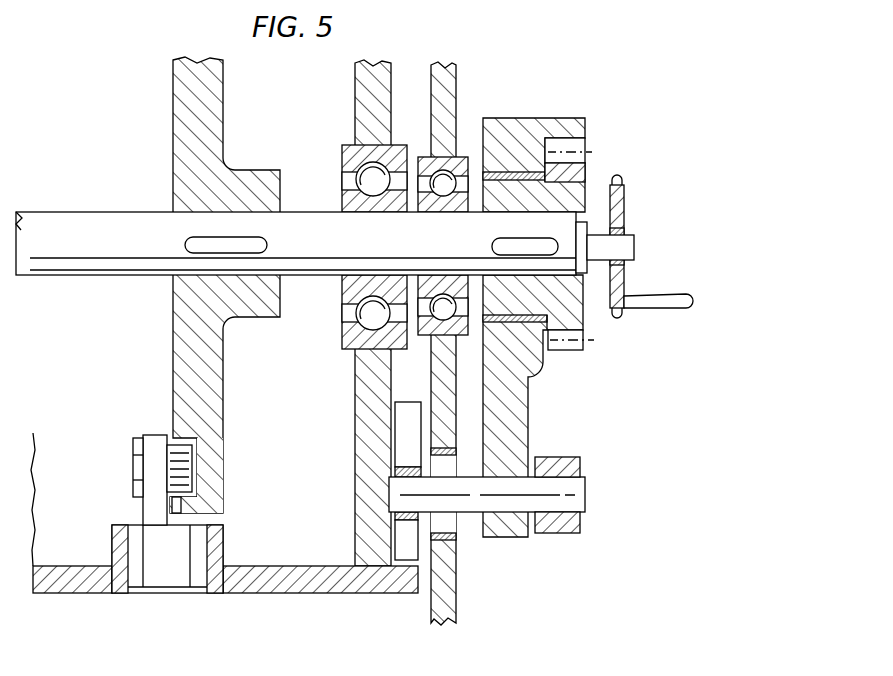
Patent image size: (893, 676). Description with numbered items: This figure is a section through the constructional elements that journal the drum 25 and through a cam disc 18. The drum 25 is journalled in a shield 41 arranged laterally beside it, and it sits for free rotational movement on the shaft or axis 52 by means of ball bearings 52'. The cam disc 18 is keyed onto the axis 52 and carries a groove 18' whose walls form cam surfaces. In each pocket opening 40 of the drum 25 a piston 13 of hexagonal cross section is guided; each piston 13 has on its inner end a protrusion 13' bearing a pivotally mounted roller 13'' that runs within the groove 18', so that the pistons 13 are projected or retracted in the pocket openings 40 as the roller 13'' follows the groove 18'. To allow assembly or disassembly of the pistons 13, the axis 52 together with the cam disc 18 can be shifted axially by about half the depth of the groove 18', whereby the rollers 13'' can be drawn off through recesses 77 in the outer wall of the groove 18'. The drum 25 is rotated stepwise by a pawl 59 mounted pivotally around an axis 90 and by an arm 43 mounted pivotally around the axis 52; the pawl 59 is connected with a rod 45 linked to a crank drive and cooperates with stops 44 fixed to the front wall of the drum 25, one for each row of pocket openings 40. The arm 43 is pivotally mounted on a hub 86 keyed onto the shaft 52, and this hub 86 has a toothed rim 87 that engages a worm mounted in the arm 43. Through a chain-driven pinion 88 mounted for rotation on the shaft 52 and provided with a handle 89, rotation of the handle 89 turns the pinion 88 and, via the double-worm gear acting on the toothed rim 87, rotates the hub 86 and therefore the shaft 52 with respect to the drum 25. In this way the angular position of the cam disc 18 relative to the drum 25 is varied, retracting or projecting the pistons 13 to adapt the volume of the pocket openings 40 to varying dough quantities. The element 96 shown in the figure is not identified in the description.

The axis 52 is at (325, 266).
The ball bearings 52' is at (352, 314).
The cam disc 18 is at (225, 285).
The groove 18' is at (222, 475).
The piston 13 is at (138, 531).
The protrusion 13' is at (129, 480).
The roller 13'' is at (223, 470).
The recess 77 is at (172, 505).
The pocket opening 40 is at (128, 556).
The drum 25 is at (296, 578).
The wall 96 is at (372, 380).
The pawl 59 is at (404, 432).
The stop 44 is at (402, 541).
The shield 41 is at (440, 582).
The arm 43 is at (505, 424).
The hub 86 is at (565, 178).
The toothed rim 87 is at (571, 340).
The pinion 88 is at (614, 318).
The handle 89 is at (674, 302).
The axis 90 is at (503, 497).
The rod 45 is at (555, 530).